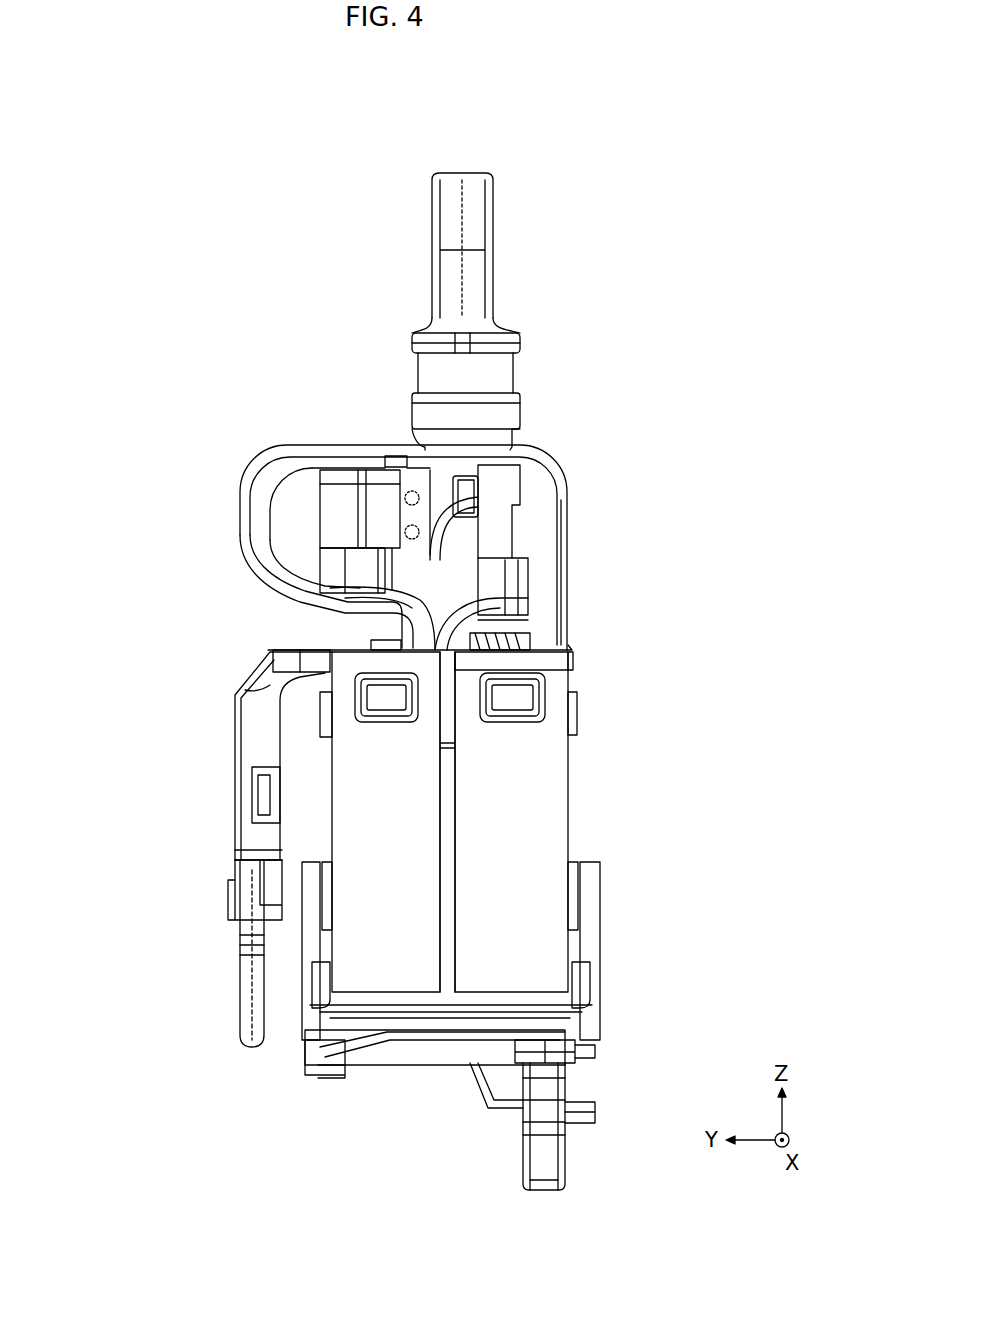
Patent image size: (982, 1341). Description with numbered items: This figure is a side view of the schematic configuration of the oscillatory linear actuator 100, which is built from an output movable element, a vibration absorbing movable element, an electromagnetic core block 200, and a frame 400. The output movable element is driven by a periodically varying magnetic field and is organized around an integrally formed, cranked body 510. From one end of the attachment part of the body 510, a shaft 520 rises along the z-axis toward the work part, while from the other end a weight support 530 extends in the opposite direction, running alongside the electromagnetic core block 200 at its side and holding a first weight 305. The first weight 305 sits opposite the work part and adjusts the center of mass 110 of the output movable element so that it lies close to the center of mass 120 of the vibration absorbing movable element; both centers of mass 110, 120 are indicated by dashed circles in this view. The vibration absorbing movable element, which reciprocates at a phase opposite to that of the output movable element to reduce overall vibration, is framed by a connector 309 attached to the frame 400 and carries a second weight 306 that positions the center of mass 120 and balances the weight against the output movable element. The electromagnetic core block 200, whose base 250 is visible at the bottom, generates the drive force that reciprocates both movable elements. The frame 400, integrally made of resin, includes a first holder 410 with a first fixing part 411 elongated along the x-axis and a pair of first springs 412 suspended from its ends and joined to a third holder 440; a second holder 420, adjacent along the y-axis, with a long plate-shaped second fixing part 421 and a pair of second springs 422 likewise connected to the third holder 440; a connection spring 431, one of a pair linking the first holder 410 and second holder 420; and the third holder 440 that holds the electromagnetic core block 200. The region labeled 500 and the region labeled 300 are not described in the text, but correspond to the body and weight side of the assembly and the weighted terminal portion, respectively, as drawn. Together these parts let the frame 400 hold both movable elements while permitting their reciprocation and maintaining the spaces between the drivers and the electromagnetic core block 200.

The oscillatory linear actuator 100 is at (272, 136).
The center of mass of output movable element 110 is at (398, 452).
The center of mass of vibration absorbing movable element 120 is at (470, 502).
The electromagnetic core block 200 is at (598, 1216).
The base 250 is at (572, 1056).
The terminal unit 300 is at (318, 334).
The first weight 305 is at (255, 985).
The second weight 306 is at (380, 508).
The connector 309 is at (355, 570).
The frame 400 is at (658, 735).
The first holder 410 is at (323, 788).
The first fixing part 411 is at (375, 655).
The first springs 412 is at (395, 745).
The second holder 420 is at (620, 811).
The second fixing part 421 is at (560, 655).
The second springs 422 is at (555, 787).
The connection spring 431 is at (575, 500).
The third holder 440 is at (598, 945).
The bracket 500 is at (222, 683).
The body 510 is at (330, 655).
The shaft 520 is at (465, 204).
The weight support 530 is at (262, 707).